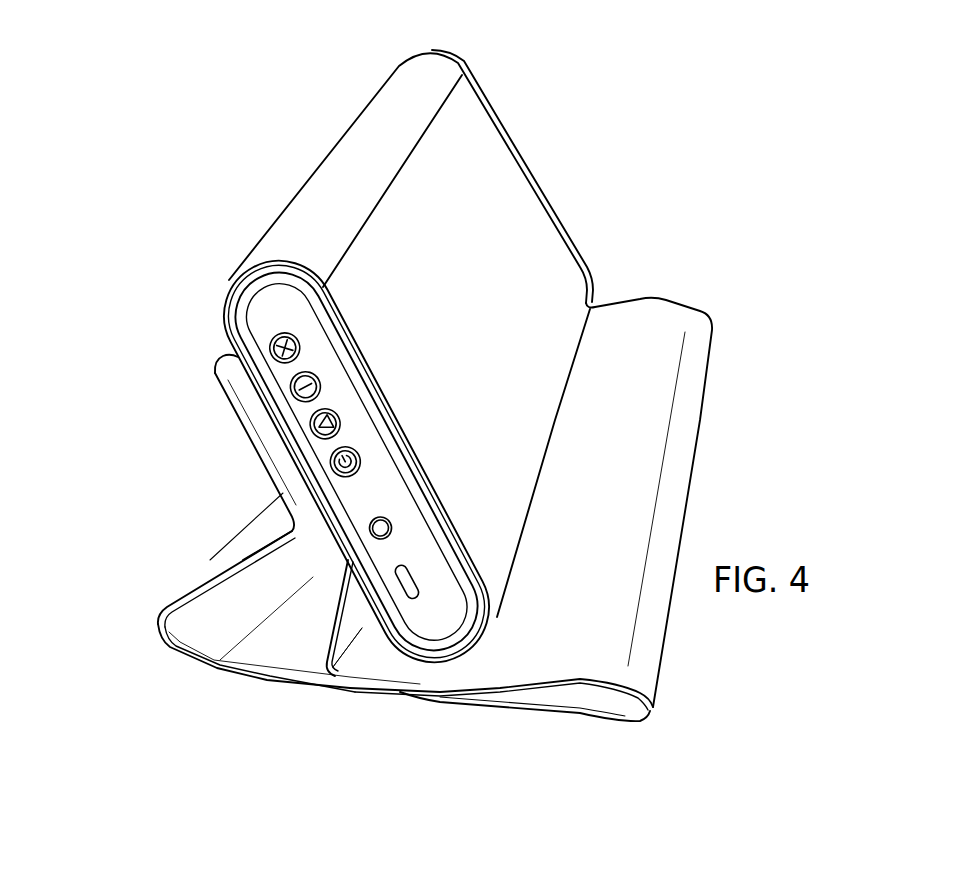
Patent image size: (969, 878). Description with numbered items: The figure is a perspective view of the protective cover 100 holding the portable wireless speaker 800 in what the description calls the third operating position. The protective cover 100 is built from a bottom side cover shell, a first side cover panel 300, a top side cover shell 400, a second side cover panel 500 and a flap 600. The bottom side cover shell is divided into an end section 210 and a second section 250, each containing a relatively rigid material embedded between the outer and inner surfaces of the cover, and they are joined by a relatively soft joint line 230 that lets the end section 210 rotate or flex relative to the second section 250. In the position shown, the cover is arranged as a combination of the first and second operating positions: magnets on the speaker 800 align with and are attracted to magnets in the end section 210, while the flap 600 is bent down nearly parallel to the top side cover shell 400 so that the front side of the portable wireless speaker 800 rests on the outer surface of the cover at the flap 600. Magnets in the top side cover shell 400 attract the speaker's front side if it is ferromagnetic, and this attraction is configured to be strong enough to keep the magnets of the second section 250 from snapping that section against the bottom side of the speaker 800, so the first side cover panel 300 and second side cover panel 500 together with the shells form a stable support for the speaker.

The portable wireless speaker 800 is at (447, 57).
The protective cover 100 is at (679, 312).
The end section 210 is at (218, 383).
The joint line 230 is at (262, 513).
The second section 250 is at (210, 572).
The first side cover panel 300 is at (208, 597).
The top side cover shell 400 is at (433, 690).
The second side cover panel 500 is at (622, 700).
The flap 600 is at (403, 660).